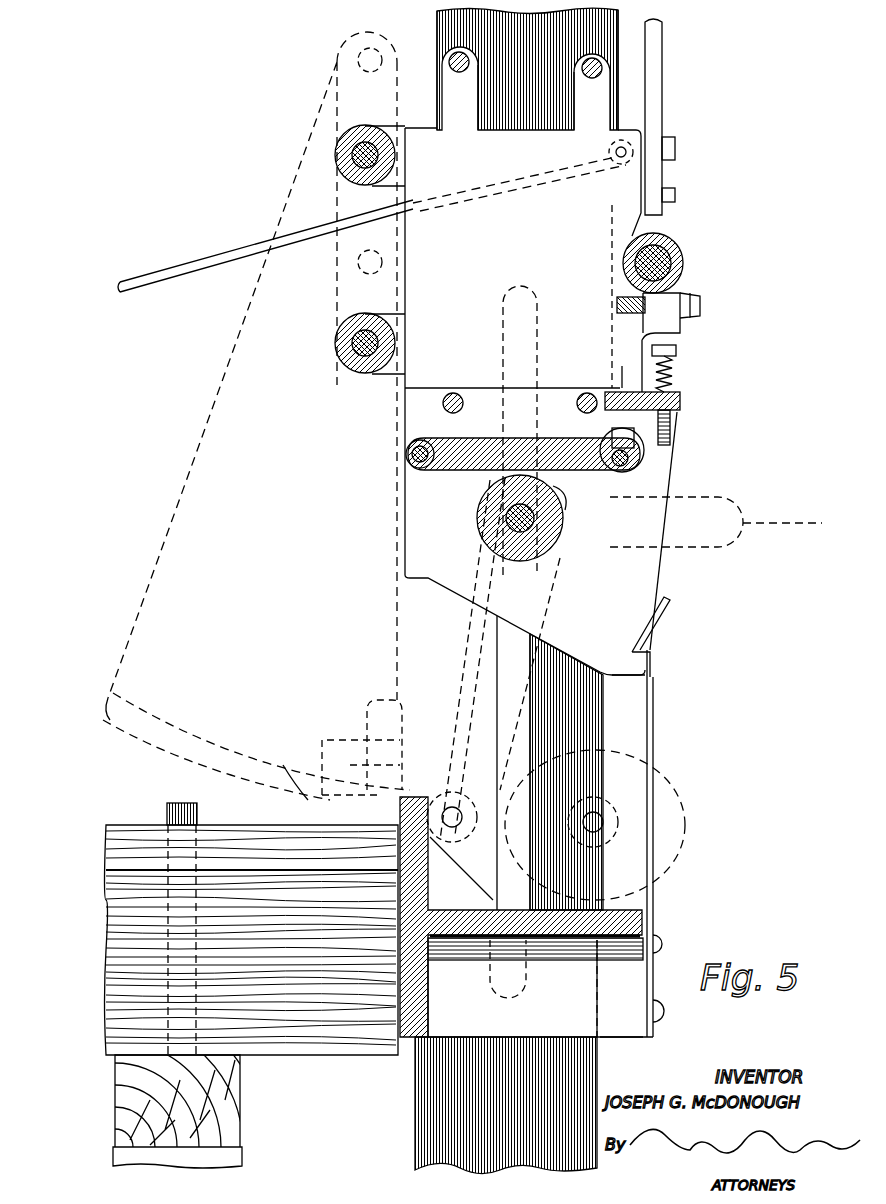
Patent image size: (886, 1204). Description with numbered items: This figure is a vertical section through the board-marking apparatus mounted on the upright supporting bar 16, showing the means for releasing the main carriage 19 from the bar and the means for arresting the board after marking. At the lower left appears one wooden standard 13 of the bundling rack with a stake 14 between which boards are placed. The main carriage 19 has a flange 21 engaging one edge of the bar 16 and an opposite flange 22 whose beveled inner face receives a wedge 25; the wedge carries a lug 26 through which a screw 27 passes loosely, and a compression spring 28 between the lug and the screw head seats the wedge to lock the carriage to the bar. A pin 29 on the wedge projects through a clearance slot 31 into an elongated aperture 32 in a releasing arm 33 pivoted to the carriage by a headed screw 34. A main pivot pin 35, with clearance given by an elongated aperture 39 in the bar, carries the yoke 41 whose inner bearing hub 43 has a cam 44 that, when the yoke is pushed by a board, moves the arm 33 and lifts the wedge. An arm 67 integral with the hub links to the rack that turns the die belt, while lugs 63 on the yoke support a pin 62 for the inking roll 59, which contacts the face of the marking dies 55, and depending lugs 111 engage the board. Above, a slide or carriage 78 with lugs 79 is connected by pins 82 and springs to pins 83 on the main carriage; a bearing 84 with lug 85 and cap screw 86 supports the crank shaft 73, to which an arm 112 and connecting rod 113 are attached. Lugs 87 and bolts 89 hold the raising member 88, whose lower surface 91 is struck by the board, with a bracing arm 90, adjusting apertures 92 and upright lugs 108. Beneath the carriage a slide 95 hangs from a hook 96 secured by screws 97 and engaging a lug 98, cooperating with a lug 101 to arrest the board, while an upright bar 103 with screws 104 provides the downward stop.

The wooden standard 13 is at (200, 1110).
The stake 14 is at (176, 812).
The upright supporting bar 16 is at (600, 30).
The main carriage 19 is at (568, 600).
The flange 21 is at (405, 418).
The flange 22 is at (675, 430).
The wedge 25 is at (674, 376).
The lug 26 is at (680, 402).
The screw 27 is at (677, 350).
The compression spring 28 is at (672, 372).
The pin 29 is at (632, 460).
The clearance slot 31 is at (612, 436).
The elongated aperture 32 is at (628, 456).
The releasing arm 33 is at (472, 445).
The headed screw 34 is at (412, 456).
The main pivot pin 35 is at (505, 518).
The elongated aperture 39 is at (525, 318).
The yoke 41 is at (470, 690).
The inner bearing hub 43 is at (505, 495).
The cam 44 is at (563, 500).
The inclined slot 55 is at (458, 850).
The inking roll 59 is at (688, 800).
The pin 62 is at (603, 824).
The lug 63 is at (580, 800).
The arm 67 is at (796, 523).
The crank shaft 73 is at (655, 263).
The slide or carriage 78 is at (483, 160).
The lug 79 is at (475, 60).
The pin 82 is at (452, 58).
The pin 83 is at (455, 394).
The bearing 84 is at (662, 240).
The lug 85 is at (670, 333).
The cap screw 86 is at (700, 306).
The lug 87 is at (400, 127).
The raising member 88 is at (228, 360).
The bolt 89 is at (357, 155).
The transversely extending arm 90 is at (395, 735).
The lower surface 91 is at (178, 770).
The aperture 92 is at (360, 55).
The slide 95 is at (487, 1007).
The hook 96 is at (656, 686).
The screw 97 is at (660, 1008).
The lug 98 is at (660, 655).
The lug 101 is at (278, 773).
The upright bar 103 is at (693, 117).
The screw 104 is at (676, 195).
The upright lug 108 is at (361, 767).
The depending lug 111 is at (535, 988).
The arm 112 is at (613, 210).
The connecting rod 113 is at (190, 265).